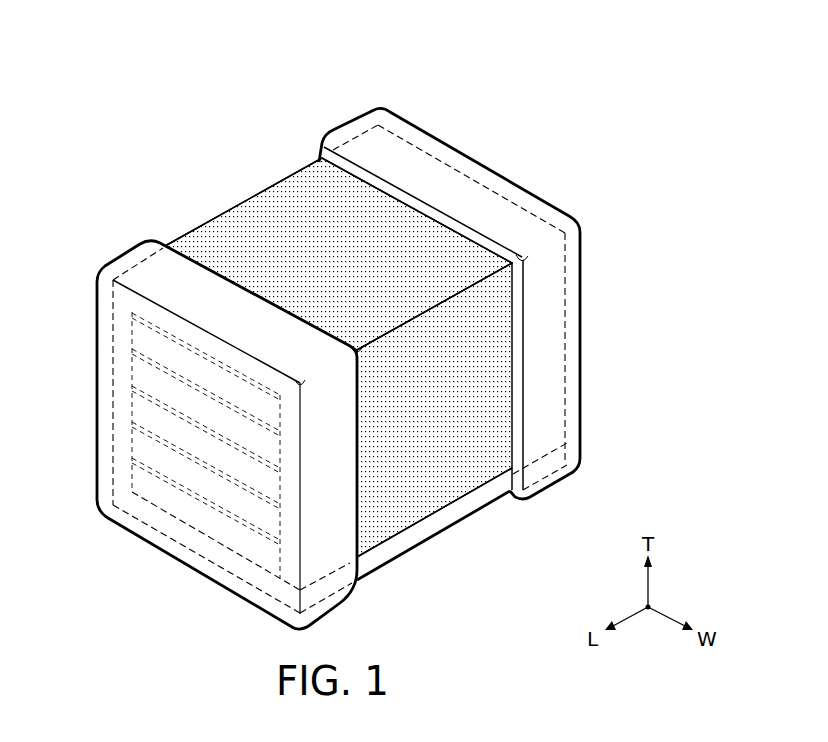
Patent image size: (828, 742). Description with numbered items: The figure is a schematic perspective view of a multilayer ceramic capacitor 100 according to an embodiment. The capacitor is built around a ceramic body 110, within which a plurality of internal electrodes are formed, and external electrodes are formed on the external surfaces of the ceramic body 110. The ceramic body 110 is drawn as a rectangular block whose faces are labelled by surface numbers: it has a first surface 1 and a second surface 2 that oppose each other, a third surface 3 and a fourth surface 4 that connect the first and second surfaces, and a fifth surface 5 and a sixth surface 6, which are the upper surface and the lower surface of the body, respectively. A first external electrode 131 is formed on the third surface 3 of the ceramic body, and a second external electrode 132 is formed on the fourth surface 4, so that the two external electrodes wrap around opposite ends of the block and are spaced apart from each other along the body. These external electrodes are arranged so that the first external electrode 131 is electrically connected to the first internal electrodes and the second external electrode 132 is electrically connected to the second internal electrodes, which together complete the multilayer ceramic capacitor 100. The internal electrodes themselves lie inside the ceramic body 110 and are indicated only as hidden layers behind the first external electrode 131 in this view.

The multilayer ceramic capacitor 100 is at (166, 40).
The ceramic body 110 is at (338, 352).
The first external electrode 131 is at (220, 409).
The second external electrode 132 is at (476, 278).
The first surface 1 is at (211, 241).
The second surface 2 is at (550, 408).
The third surface 3 is at (173, 548).
The fourth surface 4 is at (418, 164).
The fifth surface 5 is at (309, 196).
The sixth surface 6 is at (448, 522).